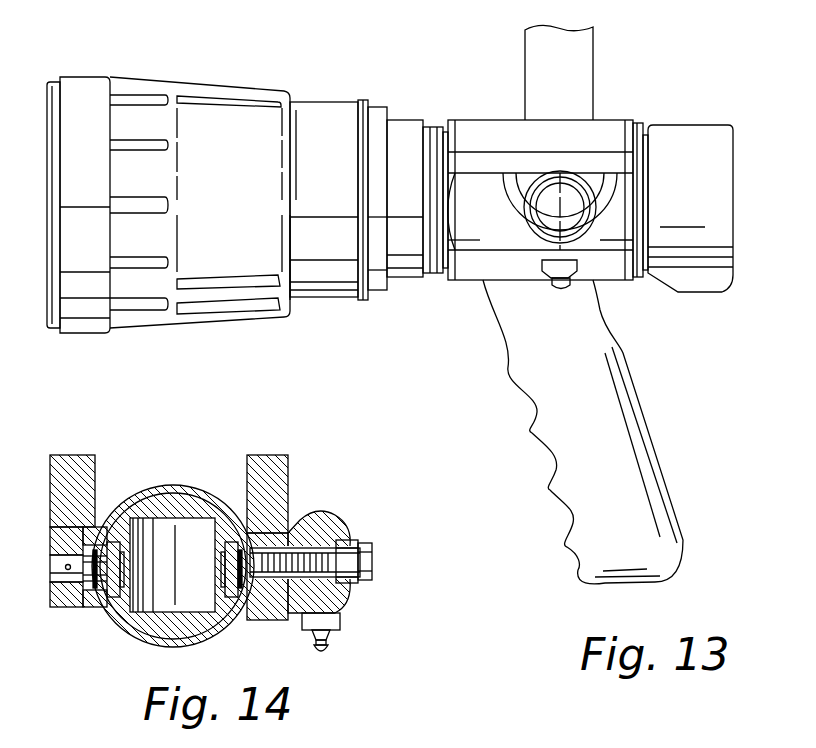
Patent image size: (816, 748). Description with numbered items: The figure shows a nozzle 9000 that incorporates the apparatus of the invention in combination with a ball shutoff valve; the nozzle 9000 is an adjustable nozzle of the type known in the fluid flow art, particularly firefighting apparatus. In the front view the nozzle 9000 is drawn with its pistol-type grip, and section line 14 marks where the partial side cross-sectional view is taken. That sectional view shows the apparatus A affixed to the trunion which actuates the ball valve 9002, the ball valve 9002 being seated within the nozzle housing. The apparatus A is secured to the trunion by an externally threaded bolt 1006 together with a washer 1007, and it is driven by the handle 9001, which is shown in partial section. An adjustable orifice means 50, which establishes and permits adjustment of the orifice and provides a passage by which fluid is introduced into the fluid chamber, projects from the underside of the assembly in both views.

In FIG. 13, the nozzle 9000 is at (440, 87).
In FIG. 13, the section line 14— 14 is at (560, 330).
In FIG. 13, the adjustable orifice means 50 is at (542, 263).
In FIG. 14, the adjustable orifice means 50 is at (340, 622).
In FIG. 14, the handle 9001 is at (370, 436).
In FIG. 14, the ball valve 9002 is at (128, 594).
In FIG. 14, the apparatus A is at (327, 513).
In FIG. 14, the washer 1007 is at (350, 537).
In FIG. 14, the externally threaded bolt 1006 is at (455, 575).